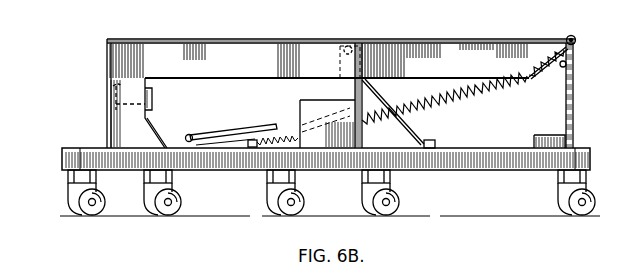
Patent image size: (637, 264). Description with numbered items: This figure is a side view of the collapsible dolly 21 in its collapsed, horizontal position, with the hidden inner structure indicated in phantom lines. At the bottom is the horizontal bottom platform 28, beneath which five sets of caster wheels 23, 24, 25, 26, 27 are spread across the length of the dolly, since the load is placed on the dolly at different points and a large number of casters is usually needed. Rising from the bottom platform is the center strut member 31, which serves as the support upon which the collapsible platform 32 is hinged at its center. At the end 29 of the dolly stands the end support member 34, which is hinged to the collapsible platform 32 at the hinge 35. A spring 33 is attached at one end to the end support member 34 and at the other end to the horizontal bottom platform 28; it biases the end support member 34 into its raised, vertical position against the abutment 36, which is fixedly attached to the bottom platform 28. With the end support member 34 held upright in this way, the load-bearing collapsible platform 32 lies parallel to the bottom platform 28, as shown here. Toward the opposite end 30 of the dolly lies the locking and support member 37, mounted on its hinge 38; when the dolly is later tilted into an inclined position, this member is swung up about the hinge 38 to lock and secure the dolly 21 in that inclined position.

The dolly 21 is at (204, 30).
The caster wheel 23 is at (572, 195).
The caster wheel 24 is at (400, 199).
The caster wheel 25 is at (305, 199).
The caster wheel 26 is at (181, 199).
The caster wheel 27 is at (105, 199).
The horizontal bottom platform 28 is at (500, 158).
The end 29 is at (584, 158).
The end 30 is at (86, 157).
The center strut member 31 is at (338, 76).
The collapsible platform 32 is at (436, 53).
The spring 33 is at (456, 100).
The end support member 34 is at (576, 98).
The hinge 35 is at (575, 36).
The abutment 36 is at (557, 143).
The locking and support member 37 is at (257, 130).
The hinge 38 is at (152, 99).